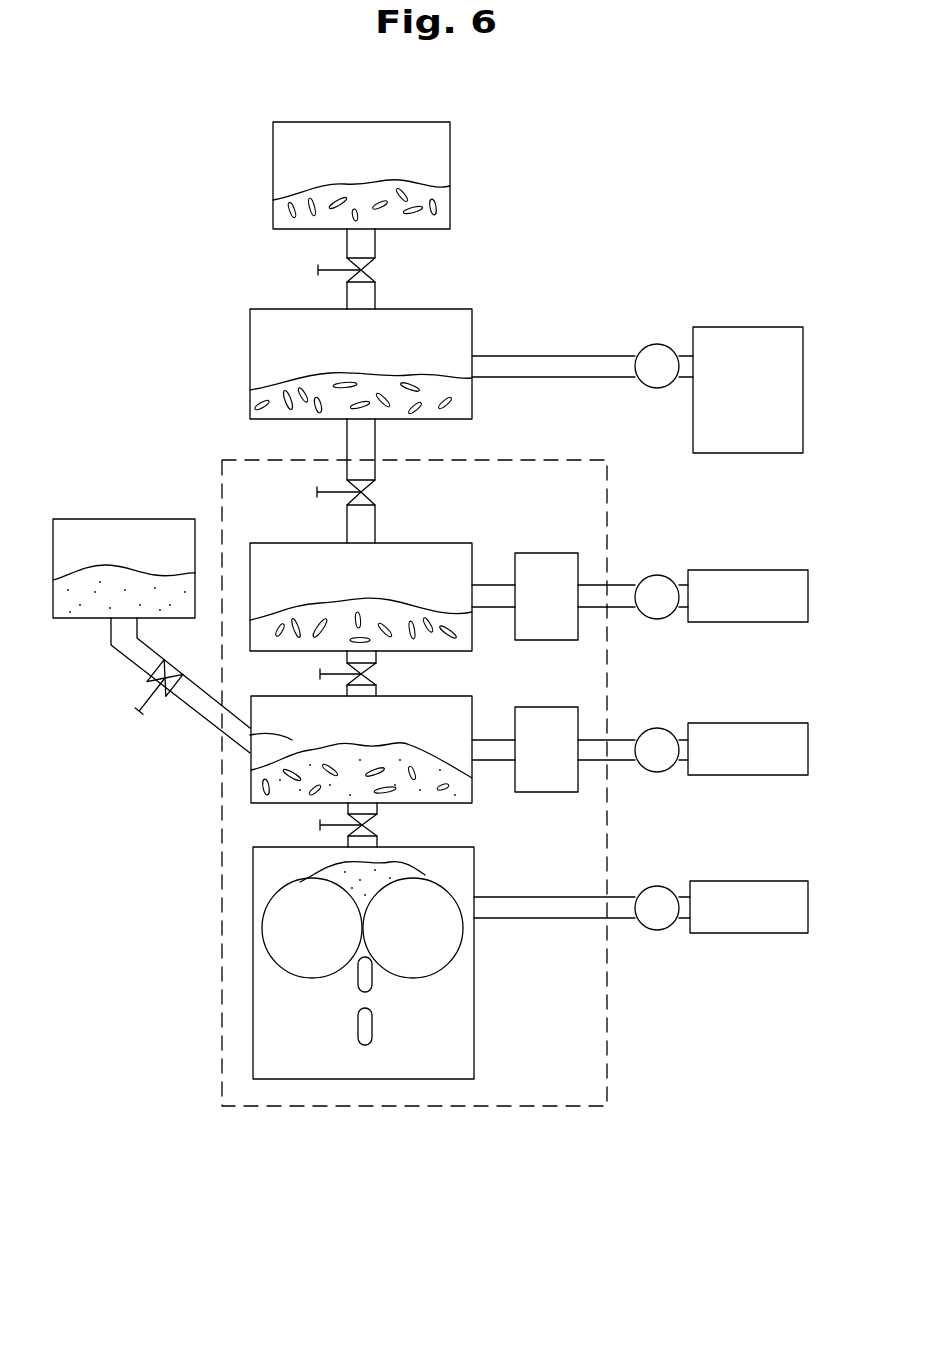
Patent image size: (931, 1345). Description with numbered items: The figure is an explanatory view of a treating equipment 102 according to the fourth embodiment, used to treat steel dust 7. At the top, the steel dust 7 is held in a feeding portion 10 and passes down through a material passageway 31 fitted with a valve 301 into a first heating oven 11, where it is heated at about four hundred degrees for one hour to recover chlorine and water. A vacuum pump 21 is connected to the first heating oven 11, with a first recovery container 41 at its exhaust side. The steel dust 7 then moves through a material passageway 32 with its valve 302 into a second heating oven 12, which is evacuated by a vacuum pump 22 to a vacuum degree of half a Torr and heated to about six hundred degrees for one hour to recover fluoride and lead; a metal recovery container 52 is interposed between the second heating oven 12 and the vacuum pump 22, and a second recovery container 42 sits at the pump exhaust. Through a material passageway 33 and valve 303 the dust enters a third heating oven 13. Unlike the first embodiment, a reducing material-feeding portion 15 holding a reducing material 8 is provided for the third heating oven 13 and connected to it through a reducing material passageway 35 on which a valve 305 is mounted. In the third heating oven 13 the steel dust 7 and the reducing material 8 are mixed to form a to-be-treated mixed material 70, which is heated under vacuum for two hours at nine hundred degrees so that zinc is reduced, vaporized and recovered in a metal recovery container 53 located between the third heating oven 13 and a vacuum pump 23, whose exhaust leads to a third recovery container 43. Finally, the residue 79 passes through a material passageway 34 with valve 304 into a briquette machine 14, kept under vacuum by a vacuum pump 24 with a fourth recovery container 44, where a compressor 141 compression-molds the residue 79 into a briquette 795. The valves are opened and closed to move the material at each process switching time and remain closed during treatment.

The treating equipment 102 is at (557, 220).
The feeding portion 10 is at (273, 185).
The steel dust 7 is at (397, 188).
The material passageway 31 is at (355, 243).
The valve 301 is at (318, 271).
The first heating oven 11 is at (250, 351).
The vacuum pump 21 is at (648, 346).
The first recovery container 41 is at (743, 327).
The material passageway 32 is at (365, 441).
The valve 302 is at (325, 491).
The second heating oven 12 is at (275, 543).
The metal recovery container 52 is at (558, 553).
The vacuum pump 22 is at (663, 576).
The second recovery container 42 is at (747, 622).
The material passageway 33 is at (376, 660).
The valve 303 is at (320, 672).
The third heating oven 13 is at (251, 781).
The metal recovery container 53 is at (545, 792).
The vacuum pump 23 is at (653, 729).
The third recovery container 43 is at (753, 775).
The material passageway 34 is at (377, 813).
The valve 304 is at (335, 825).
The briquette machine 14 is at (253, 905).
The residue 79 is at (360, 878).
The compressor 141 is at (315, 953).
The briquette 795 is at (358, 1032).
The vacuum pump 24 is at (660, 930).
The fourth recovery container 44 is at (757, 933).
The reducing material-feeding portion 15 is at (62, 519).
The reducing material 8 is at (120, 580).
The reducing material passageway 35 is at (118, 632).
The valve 305 is at (138, 708).
The to-be-treated mixed material 70 is at (298, 738).